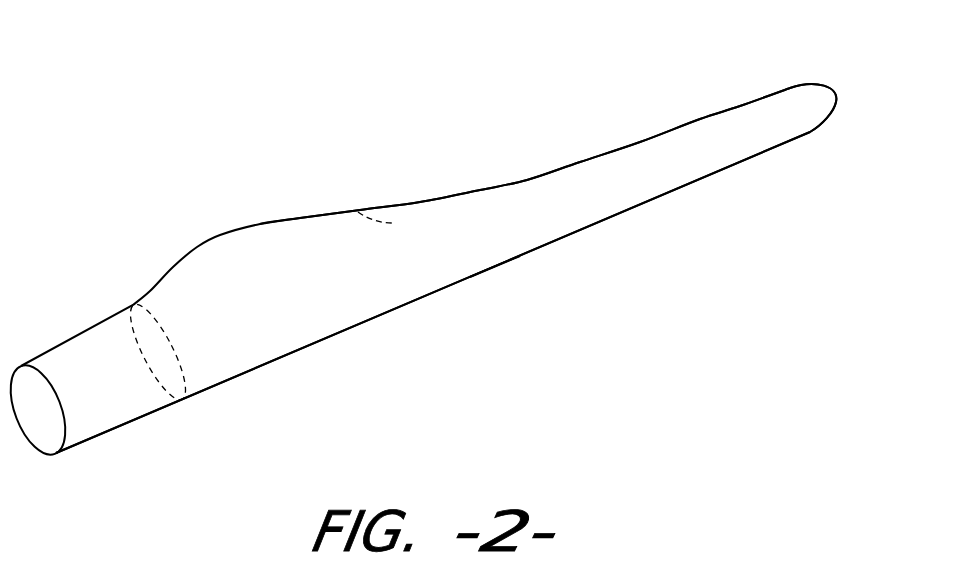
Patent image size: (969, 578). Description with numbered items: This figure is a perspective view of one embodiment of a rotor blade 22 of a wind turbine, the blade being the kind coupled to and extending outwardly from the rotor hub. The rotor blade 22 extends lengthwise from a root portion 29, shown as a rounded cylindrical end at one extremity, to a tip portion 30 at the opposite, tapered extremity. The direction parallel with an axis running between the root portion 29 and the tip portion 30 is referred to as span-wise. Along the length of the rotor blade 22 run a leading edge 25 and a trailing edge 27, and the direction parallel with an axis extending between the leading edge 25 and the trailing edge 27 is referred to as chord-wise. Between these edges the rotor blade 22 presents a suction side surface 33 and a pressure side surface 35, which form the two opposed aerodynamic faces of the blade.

The rotor blade 22 is at (203, 171).
The leading edge 25 is at (603, 222).
The trailing edge 27 is at (527, 179).
The root portion 29 is at (132, 444).
The tip portion 30 is at (846, 95).
The suction side surface 33 is at (498, 250).
The pressure side surface 35 is at (358, 212).